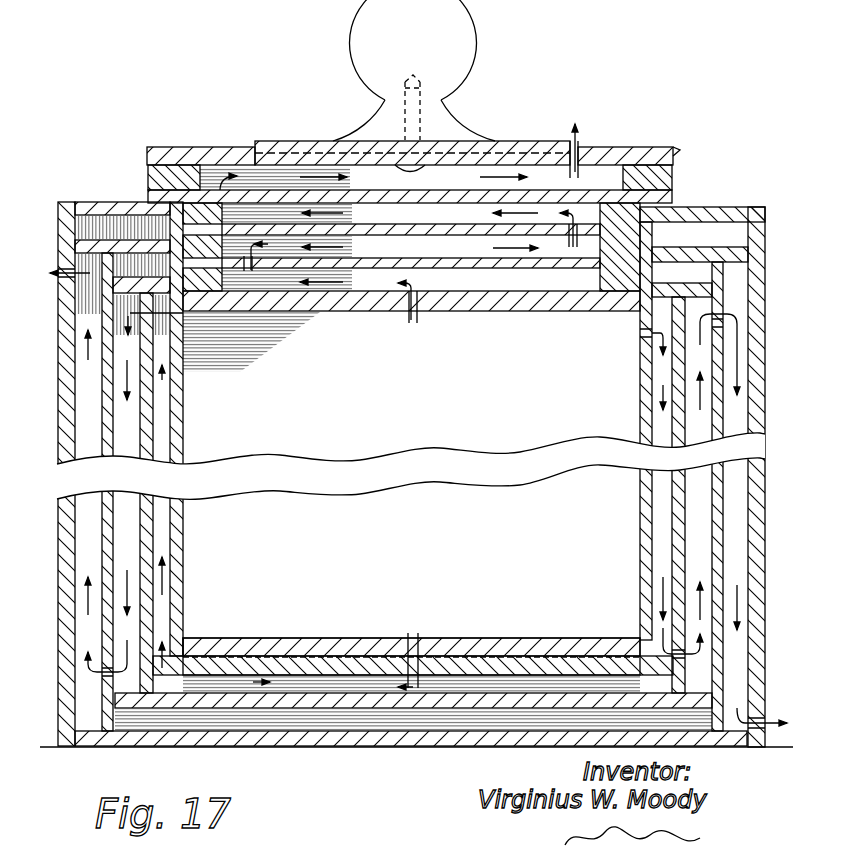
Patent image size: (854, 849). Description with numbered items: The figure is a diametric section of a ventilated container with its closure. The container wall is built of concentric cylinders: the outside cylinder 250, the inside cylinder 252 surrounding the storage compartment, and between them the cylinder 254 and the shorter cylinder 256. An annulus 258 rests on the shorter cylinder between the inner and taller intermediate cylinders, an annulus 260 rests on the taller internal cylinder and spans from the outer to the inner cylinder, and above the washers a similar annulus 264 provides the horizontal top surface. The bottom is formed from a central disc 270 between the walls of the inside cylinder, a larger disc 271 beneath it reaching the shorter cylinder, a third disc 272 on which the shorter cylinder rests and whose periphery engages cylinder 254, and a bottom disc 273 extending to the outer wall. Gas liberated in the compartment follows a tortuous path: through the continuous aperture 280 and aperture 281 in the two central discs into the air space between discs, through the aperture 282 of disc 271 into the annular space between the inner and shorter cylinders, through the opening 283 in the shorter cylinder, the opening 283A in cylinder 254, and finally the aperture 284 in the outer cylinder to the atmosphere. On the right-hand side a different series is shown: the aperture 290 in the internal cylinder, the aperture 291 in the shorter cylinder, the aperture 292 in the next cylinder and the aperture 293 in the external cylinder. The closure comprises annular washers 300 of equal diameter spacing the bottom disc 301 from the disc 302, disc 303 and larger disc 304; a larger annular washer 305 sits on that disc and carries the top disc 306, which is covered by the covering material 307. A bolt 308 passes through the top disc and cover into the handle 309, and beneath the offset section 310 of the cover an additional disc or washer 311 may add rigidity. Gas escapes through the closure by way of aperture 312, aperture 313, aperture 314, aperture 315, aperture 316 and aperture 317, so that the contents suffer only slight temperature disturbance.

The outside cylinder 250 is at (70, 538).
The inside cylinder 252 is at (176, 575).
The cylinder 254 is at (108, 540).
The shorter cylinder 256 is at (150, 550).
The annulus 258 is at (644, 324).
The annulus 260 is at (702, 247).
The annulus 264 is at (735, 213).
The central disc 270 is at (541, 648).
The disc 271 is at (563, 670).
The third disc 272 is at (567, 718).
The bottom disc 273 is at (507, 737).
The aperture 280 is at (433, 637).
The aperture 281 is at (455, 657).
The aperture 282 is at (227, 628).
The opening 283 is at (183, 313).
The opening 283A is at (93, 676).
The aperture 284 is at (62, 245).
The aperture 290 is at (643, 348).
The aperture 291 is at (680, 648).
The aperture 292 is at (714, 330).
The aperture 293 is at (737, 725).
The annular washers 300 is at (598, 273).
The bottom disc 301 is at (560, 304).
The disc 302 is at (497, 273).
The disc 303 is at (433, 237).
The disc 304 is at (427, 203).
The annular washer 305 is at (667, 176).
The top disc 306 is at (674, 160).
The covering material 307 is at (518, 141).
The bolt 308 is at (423, 117).
The handle 309 is at (462, 53).
The offset section 310 is at (250, 146).
The additional disc or washer 311 is at (293, 141).
The aperture 312 is at (432, 313).
The aperture 313 is at (254, 270).
The aperture 314 is at (576, 238).
The aperture 315 is at (148, 173).
The aperture 316 is at (597, 148).
The aperture 317 is at (573, 140).